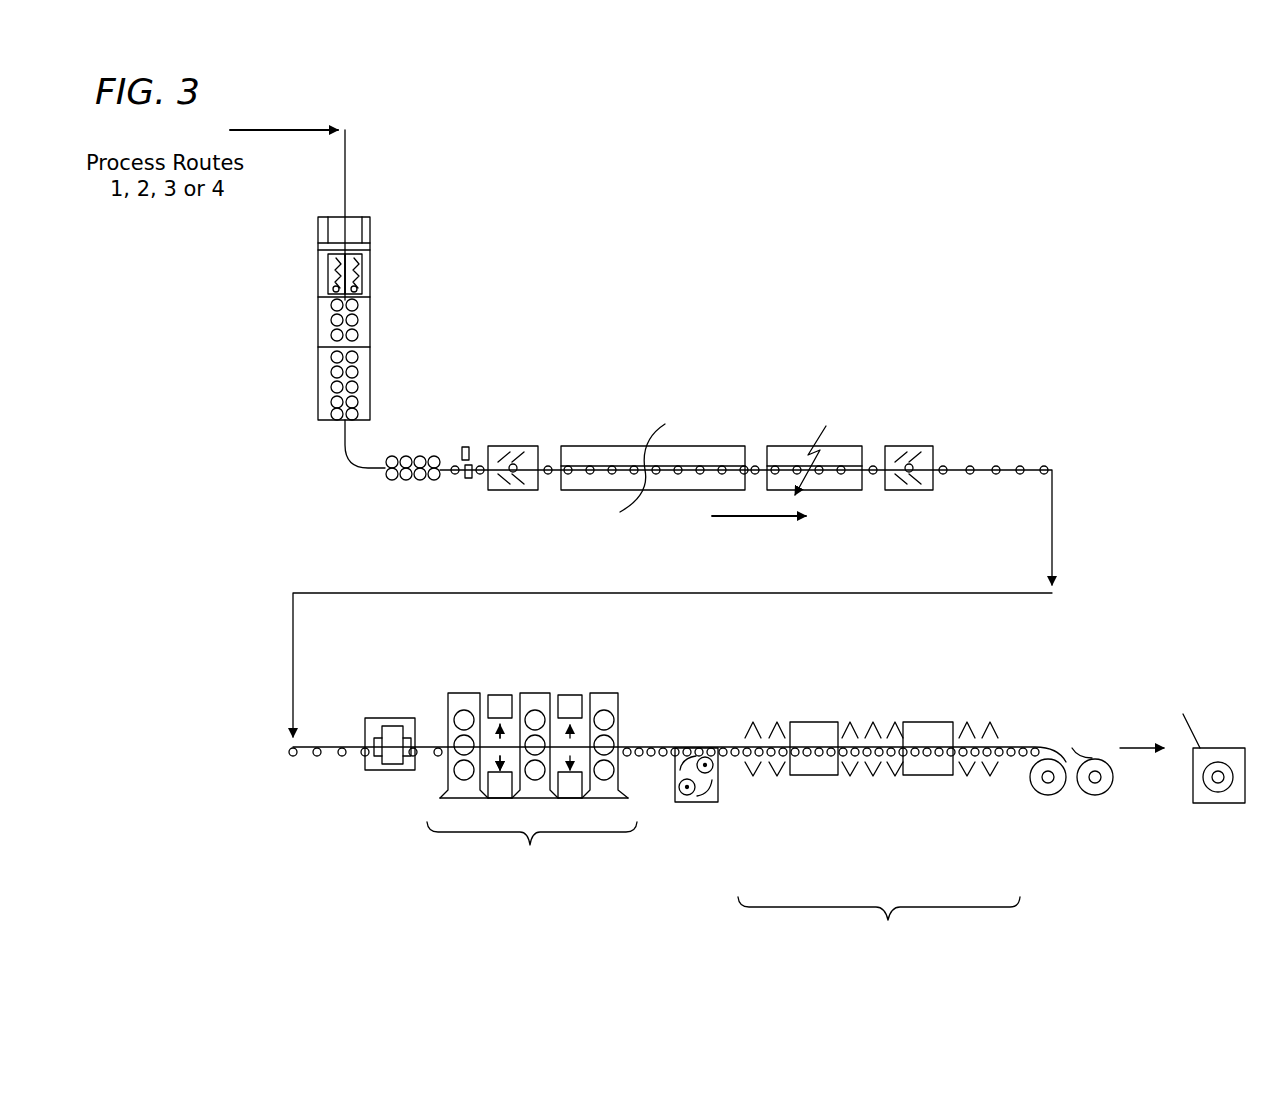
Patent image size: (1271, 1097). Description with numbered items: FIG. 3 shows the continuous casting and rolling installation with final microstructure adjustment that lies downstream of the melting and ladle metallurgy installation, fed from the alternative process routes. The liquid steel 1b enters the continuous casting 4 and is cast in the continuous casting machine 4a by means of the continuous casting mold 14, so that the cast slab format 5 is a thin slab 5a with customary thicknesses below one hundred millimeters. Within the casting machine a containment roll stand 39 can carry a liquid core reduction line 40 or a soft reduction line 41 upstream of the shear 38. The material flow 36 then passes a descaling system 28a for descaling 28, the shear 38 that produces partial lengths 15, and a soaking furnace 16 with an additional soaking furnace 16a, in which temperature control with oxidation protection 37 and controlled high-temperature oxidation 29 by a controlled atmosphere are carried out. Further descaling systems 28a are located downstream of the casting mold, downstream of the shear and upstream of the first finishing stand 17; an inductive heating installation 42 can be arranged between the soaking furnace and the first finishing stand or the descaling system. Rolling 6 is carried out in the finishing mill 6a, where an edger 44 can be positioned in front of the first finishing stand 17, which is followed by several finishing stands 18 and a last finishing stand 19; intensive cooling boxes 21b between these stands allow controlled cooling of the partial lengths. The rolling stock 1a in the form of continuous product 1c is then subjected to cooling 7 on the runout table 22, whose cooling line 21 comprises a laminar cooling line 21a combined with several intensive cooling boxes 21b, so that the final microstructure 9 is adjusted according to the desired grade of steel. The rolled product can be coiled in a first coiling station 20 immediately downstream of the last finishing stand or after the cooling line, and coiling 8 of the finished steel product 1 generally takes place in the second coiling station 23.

The steel product 1 is at (1080, 748).
The rolled product 1a is at (650, 742).
The liquid steel 1b is at (347, 182).
The continuous product 1c is at (1048, 740).
The continuous casting 4 is at (248, 275).
The continuous casting machine 4a is at (372, 318).
The slab format 5 is at (272, 455).
The thin slab 5a is at (348, 460).
The rolling 6 is at (480, 848).
The finishing mill 6a is at (532, 853).
The cooling 7 is at (756, 694).
The coiling 8 is at (1030, 797).
The final microstructure 9 is at (1220, 803).
The continuous casting mold 14 is at (372, 232).
The partial length of strand 15 is at (466, 480).
The soaking furnace 16 is at (618, 443).
The additional soaking furnace 16a is at (695, 445).
The first finishing stand 17 is at (462, 695).
The finishing stand 18 is at (540, 695).
The last finishing stand 19 is at (612, 695).
The coiling station 20 is at (700, 802).
The cooling line 21 is at (879, 926).
The laminar cooling line 21a is at (890, 722).
The intensive cooling boxes 21b is at (500, 696).
The runout table 22 is at (1015, 762).
The coiling station 23 is at (1052, 793).
The descaling 28 is at (310, 282).
The descaling system 28a is at (372, 270).
The controlled high-temperature oxidation 29 is at (663, 492).
The material flow 36 is at (762, 518).
The controlled cooling and oxidation protection 37 is at (728, 466).
The shear 38 is at (468, 444).
The containment roll stand 39 is at (335, 385).
The liquid core reduction line 40 is at (310, 328).
The soft reduction line 41 is at (308, 408).
The inductive heating installation 42 is at (832, 440).
The edger 44 is at (388, 718).